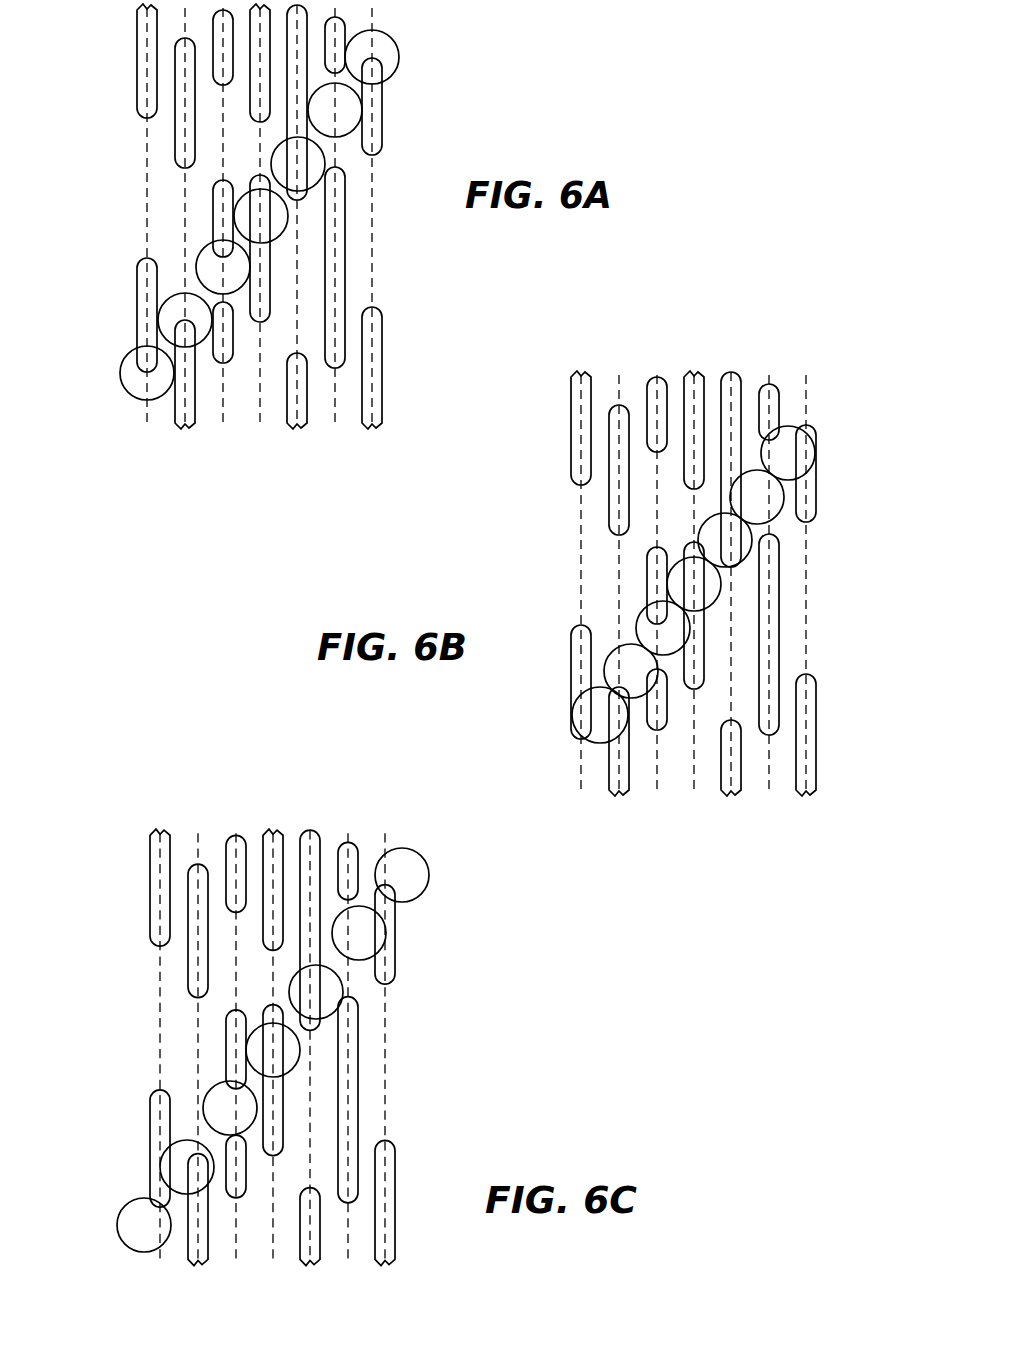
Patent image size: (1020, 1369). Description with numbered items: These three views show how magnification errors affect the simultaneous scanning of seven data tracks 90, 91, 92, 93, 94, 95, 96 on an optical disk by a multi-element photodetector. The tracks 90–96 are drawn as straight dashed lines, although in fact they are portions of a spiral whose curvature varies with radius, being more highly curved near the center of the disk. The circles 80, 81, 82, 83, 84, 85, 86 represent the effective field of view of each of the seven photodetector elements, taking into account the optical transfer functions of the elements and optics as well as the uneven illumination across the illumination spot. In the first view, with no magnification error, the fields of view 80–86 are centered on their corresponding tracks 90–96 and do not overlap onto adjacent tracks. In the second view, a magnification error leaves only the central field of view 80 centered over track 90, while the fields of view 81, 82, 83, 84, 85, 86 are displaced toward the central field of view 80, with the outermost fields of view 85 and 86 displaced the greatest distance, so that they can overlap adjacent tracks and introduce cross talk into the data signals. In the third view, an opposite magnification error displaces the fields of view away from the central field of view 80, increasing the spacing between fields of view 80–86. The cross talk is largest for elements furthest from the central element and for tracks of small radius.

In FIG. 6A, the central field of view 80 is at (288, 214).
In FIG. 6B, the central field of view 80 is at (721, 586).
In FIG. 6C, the central field of view 80 is at (300, 1050).
In FIG. 6A, the field of view 81 is at (197, 262).
In FIG. 6B, the field of view 81 is at (636, 625).
In FIG. 6C, the field of view 81 is at (203, 1103).
In FIG. 6A, the field of view 82 is at (325, 161).
In FIG. 6B, the field of view 82 is at (752, 543).
In FIG. 6C, the field of view 82 is at (343, 992).
In FIG. 6A, the field of view 83 is at (160, 302).
In FIG. 6B, the field of view 83 is at (604, 667).
In FIG. 6C, the field of view 83 is at (160, 1168).
In FIG. 6A, the field of view 84 is at (359, 98).
In FIG. 6B, the field of view 84 is at (784, 504).
In FIG. 6C, the field of view 84 is at (386, 933).
In FIG. 6A, the field of view 85 is at (120, 373).
In FIG. 6B, the field of view 85 is at (575, 732).
In FIG. 6C, the field of view 85 is at (117, 1228).
In FIG. 6A, the field of view 86 is at (399, 61).
In FIG. 6B, the field of view 86 is at (816, 453).
In FIG. 6C, the field of view 86 is at (428, 882).
In FIG. 6A, the central track 90 is at (260, 422).
In FIG. 6B, the central track 90 is at (693, 790).
In FIG. 6C, the central track 90 is at (272, 1257).
In FIG. 6A, the track 91 is at (223, 422).
In FIG. 6B, the track 91 is at (656, 790).
In FIG. 6C, the track 91 is at (235, 1258).
In FIG. 6A, the track 92 is at (297, 423).
In FIG. 6B, the track 92 is at (730, 792).
In FIG. 6C, the track 92 is at (310, 1260).
In FIG. 6A, the track 93 is at (187, 423).
In FIG. 6B, the track 93 is at (618, 793).
In FIG. 6C, the track 93 is at (198, 1260).
In FIG. 6A, the track 94 is at (335, 422).
In FIG. 6B, the track 94 is at (768, 790).
In FIG. 6C, the track 94 is at (347, 1258).
In FIG. 6A, the track 95 is at (147, 422).
In FIG. 6B, the track 95 is at (581, 790).
In FIG. 6C, the track 95 is at (160, 1257).
In FIG. 6A, the track 96 is at (372, 423).
In FIG. 6B, the track 96 is at (805, 792).
In FIG. 6C, the track 96 is at (384, 1260).